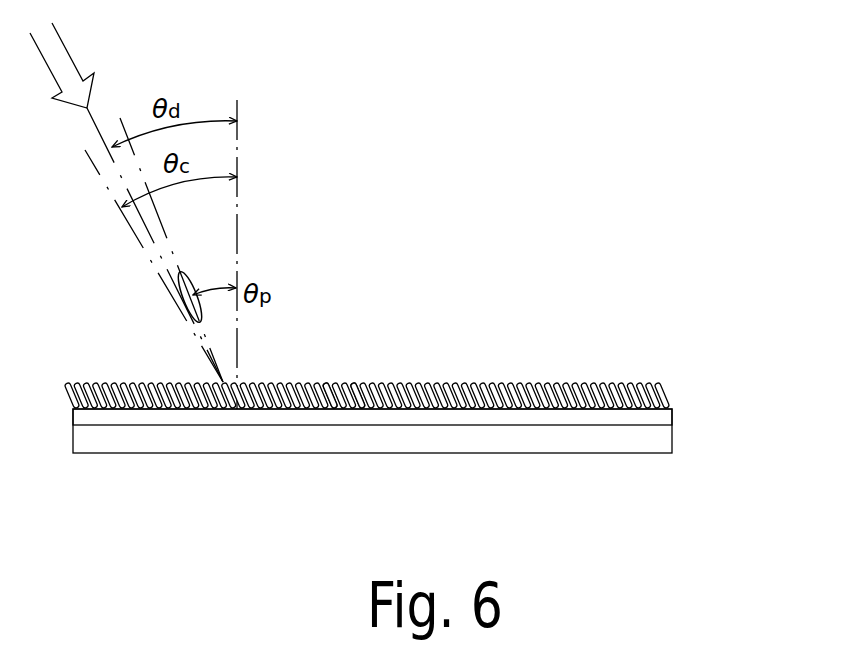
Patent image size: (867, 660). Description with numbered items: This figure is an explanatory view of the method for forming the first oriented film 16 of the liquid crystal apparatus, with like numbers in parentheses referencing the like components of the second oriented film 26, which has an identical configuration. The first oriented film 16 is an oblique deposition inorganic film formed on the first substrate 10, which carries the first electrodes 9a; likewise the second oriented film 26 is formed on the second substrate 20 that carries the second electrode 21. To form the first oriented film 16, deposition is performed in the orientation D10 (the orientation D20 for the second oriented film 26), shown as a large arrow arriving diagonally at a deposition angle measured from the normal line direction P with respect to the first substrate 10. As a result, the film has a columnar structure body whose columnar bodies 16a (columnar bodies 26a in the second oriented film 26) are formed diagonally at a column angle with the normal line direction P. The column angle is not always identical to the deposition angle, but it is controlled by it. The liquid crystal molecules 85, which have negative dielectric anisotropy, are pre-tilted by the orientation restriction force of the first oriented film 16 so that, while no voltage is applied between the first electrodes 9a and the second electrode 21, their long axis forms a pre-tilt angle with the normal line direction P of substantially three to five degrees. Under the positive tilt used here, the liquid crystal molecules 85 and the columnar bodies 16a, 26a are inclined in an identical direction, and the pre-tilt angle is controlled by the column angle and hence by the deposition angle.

The orientation of deposition D10 is at (126, 191).
The orientation of deposition D20 is at (126, 191).
The normal line direction P is at (249, 254).
The liquid crystal molecules 85 is at (185, 272).
The first oriented film 16 is at (432, 403).
The second oriented film 26 is at (660, 390).
The columnar bodies 16a is at (422, 436).
The columnar bodies 26a is at (335, 396).
The first electrodes 9a is at (435, 398).
The second electrode 21 is at (667, 408).
The first substrate 10 is at (435, 412).
The second substrate 20 is at (435, 412).